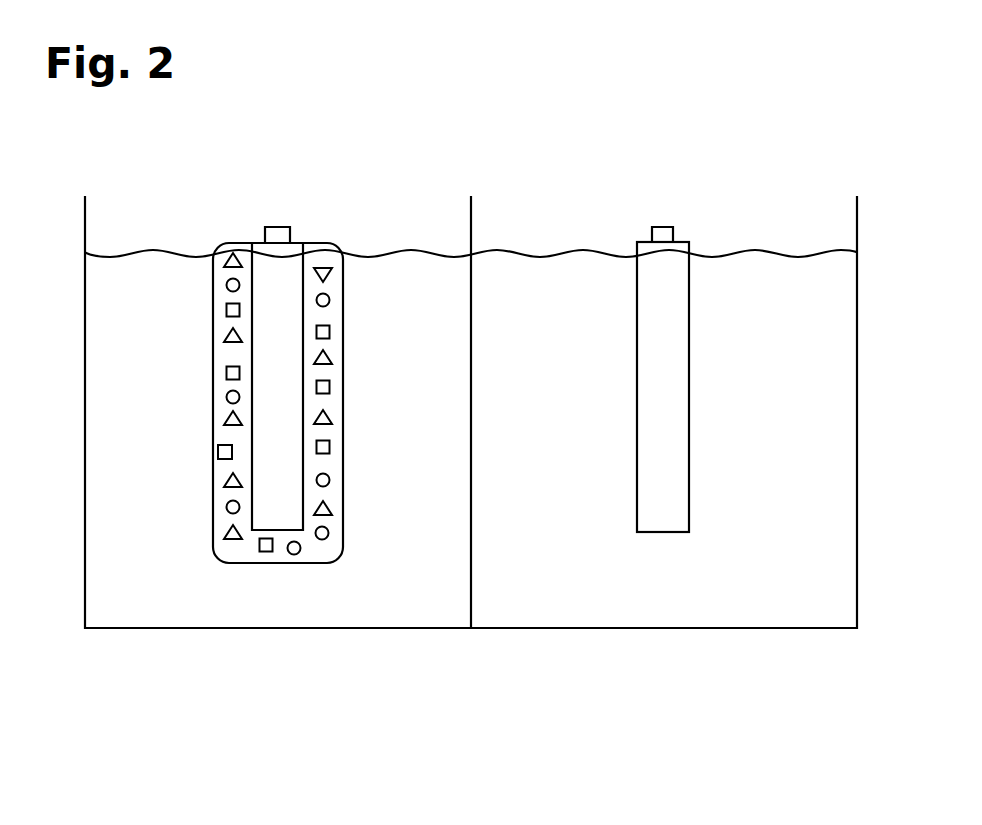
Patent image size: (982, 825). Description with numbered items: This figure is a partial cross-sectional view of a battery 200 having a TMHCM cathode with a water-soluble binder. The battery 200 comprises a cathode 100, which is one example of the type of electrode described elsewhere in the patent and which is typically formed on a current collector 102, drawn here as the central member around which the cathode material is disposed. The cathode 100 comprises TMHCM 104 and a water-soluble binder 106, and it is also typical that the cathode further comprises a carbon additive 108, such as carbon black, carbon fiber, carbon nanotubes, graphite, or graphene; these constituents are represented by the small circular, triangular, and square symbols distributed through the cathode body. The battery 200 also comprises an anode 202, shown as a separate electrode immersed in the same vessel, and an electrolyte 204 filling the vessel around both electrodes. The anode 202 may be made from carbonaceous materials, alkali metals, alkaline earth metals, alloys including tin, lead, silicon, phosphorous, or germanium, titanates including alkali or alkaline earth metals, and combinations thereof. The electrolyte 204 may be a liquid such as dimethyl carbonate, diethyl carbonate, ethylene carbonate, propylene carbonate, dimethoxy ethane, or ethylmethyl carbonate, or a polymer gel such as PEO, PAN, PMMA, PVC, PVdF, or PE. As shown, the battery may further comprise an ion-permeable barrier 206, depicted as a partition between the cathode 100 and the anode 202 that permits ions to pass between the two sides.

The cathode 100 is at (317, 347).
The current collector 102 is at (300, 391).
The TMHCM 104 is at (330, 298).
The water-soluble binder 106 is at (330, 506).
The carbon additive 108 is at (330, 445).
The battery 200 is at (596, 86).
The anode 202 is at (698, 211).
The electrolyte 204 is at (795, 604).
The ion-permeable barrier 206 is at (469, 606).